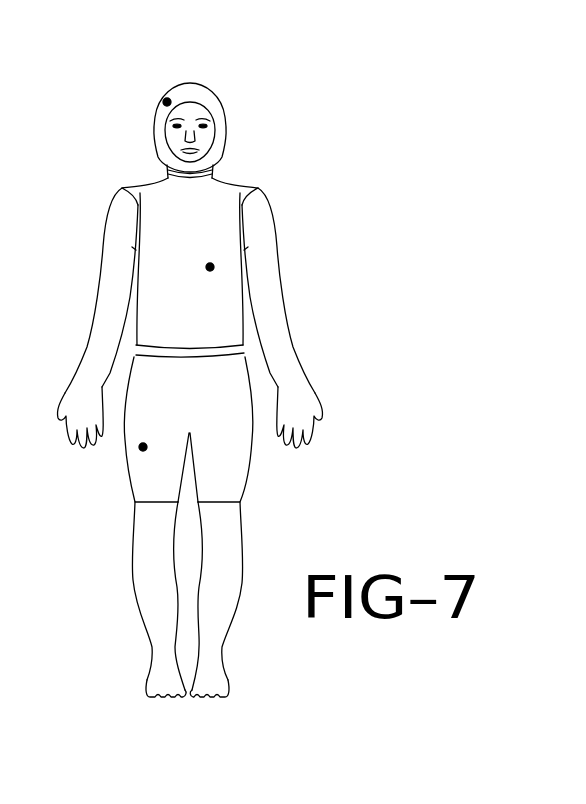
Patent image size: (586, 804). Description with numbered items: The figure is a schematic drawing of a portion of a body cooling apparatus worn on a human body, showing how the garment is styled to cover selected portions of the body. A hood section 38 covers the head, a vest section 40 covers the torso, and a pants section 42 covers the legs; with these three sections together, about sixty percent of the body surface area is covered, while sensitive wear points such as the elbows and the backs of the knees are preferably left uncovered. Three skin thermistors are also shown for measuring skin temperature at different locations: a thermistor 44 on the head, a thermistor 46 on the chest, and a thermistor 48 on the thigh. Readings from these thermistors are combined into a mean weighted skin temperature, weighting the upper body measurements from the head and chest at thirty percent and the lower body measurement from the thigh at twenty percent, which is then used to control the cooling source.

The hood section 38 is at (219, 100).
The thermistor 44 is at (164, 100).
The vest section 40 is at (165, 228).
The thermistor 46 is at (211, 264).
The pants section 42 is at (233, 457).
The thermistor 48 is at (141, 450).